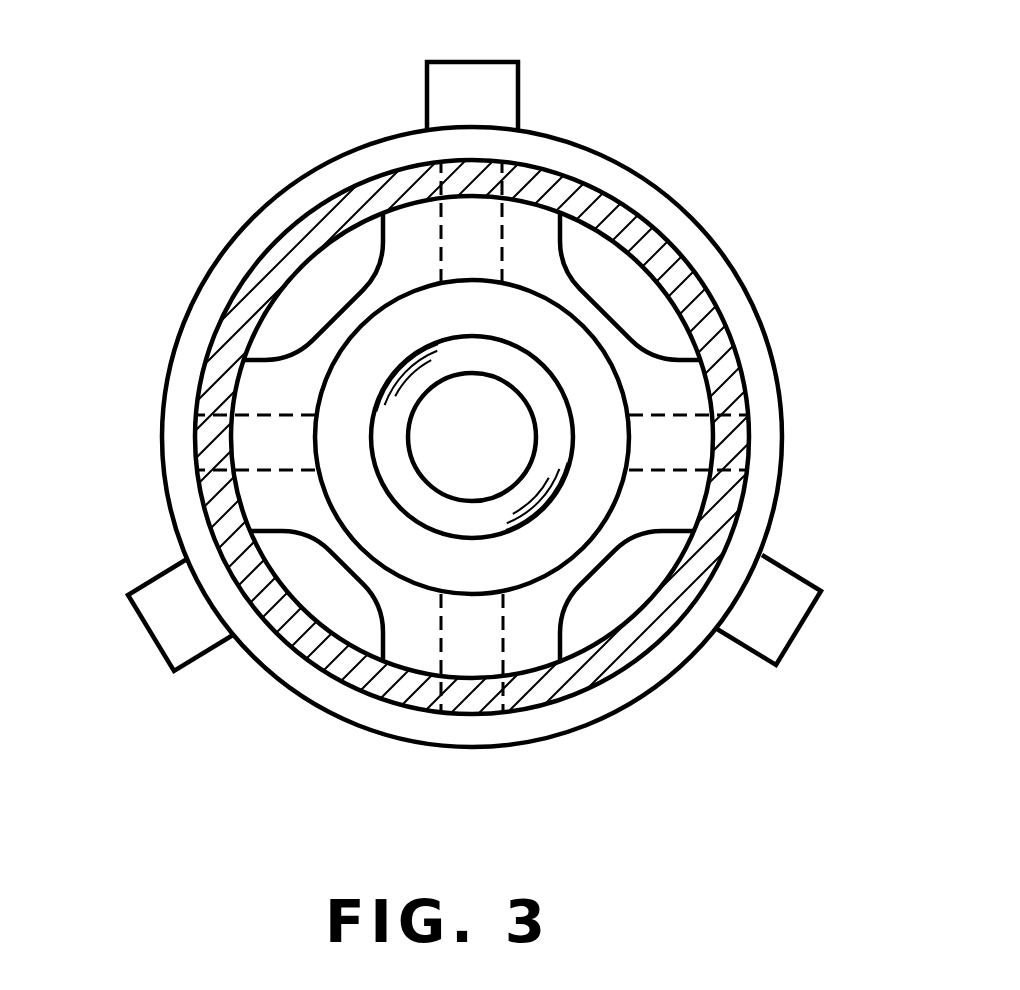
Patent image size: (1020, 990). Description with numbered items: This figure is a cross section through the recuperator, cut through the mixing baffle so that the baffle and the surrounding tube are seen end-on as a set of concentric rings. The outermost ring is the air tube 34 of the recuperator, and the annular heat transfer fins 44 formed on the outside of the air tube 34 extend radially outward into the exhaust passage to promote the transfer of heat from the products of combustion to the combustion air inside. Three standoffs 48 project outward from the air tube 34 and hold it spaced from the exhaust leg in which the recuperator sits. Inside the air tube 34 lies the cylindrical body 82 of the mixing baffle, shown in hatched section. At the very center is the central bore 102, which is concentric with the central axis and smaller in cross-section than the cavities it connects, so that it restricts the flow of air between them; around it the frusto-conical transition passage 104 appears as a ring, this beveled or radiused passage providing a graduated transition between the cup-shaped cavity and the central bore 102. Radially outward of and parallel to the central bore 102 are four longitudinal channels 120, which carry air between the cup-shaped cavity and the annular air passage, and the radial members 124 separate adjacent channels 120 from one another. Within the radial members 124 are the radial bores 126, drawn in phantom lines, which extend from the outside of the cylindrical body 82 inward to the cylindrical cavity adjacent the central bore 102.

The annular heat transfer fins 44 is at (780, 514).
The cylindrical body 82 is at (748, 360).
The air tube 34 is at (748, 292).
The standoffs 48 is at (500, 78).
The longitudinal channels 120 is at (605, 258).
The radial members 124 is at (545, 228).
The radial bores 126 is at (458, 175).
The frusto-conical transition passage 104 is at (498, 358).
The central bore 102 is at (515, 453).